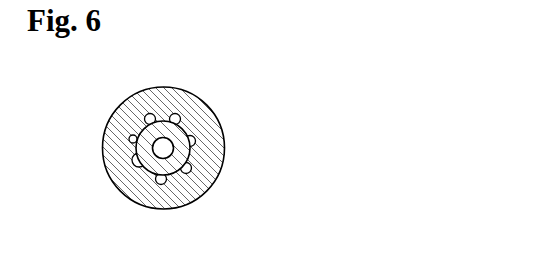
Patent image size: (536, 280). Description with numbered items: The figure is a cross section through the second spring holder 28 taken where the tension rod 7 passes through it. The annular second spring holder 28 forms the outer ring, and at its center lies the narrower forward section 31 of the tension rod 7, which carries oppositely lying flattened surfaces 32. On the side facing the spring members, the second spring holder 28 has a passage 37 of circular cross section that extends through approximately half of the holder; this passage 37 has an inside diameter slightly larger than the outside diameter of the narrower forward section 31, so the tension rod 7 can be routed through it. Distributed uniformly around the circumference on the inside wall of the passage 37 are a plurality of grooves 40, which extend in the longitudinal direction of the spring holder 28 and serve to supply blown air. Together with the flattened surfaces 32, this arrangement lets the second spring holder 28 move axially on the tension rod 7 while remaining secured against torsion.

The tension rod 7 is at (176, 140).
The second spring holder 28 is at (203, 180).
The narrower forward section 31 is at (183, 152).
The flattened surfaces 32 is at (163, 121).
The passage 37 is at (143, 162).
The grooves 40 is at (131, 139).